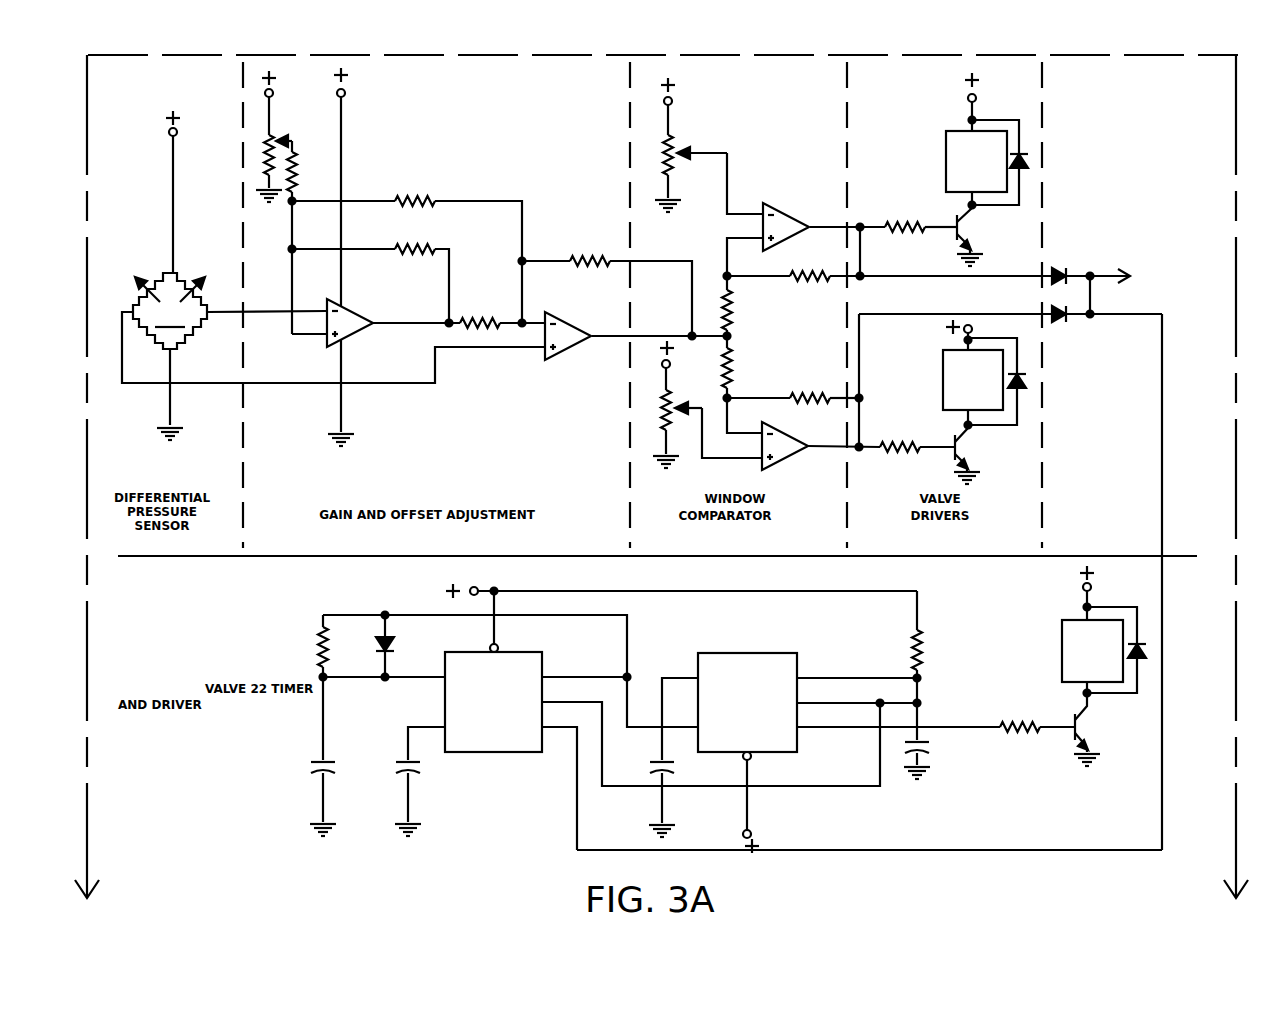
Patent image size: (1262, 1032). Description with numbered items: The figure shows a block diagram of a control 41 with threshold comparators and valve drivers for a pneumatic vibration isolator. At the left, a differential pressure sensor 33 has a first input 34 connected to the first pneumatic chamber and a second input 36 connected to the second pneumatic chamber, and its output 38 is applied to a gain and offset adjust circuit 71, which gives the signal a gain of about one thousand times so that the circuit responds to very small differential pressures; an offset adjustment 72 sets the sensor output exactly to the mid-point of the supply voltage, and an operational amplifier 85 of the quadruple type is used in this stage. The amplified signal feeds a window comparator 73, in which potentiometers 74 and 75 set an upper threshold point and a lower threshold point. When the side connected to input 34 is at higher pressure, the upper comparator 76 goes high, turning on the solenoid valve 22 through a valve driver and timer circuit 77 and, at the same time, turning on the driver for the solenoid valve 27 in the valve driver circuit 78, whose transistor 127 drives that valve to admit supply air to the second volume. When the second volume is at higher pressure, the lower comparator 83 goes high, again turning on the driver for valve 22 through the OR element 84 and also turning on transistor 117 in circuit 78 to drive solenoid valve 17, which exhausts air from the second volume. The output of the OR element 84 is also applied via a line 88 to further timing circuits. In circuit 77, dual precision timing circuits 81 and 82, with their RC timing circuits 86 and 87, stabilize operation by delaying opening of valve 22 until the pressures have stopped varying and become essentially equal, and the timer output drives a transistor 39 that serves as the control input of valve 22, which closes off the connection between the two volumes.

The differential pressure sensor 33 is at (170, 275).
The first input 34 is at (137, 277).
The second input 36 is at (203, 277).
The output 38 is at (326, 369).
The offset adjustment 72 is at (274, 130).
The OR element 84 is at (716, 288).
The operational amplifier 85 is at (623, 327).
The potentiometer 74 is at (709, 146).
The potentiometer 75 is at (707, 404).
The upper comparator 76 is at (841, 220).
The lower comparator 83 is at (858, 467).
The solenoid valve 27 is at (963, 175).
The valve driver transistor 127 is at (990, 235).
The solenoid valve 17 is at (960, 393).
The valve driver transistor 117 is at (993, 454).
The line 88 is at (1138, 270).
The control 41 is at (1122, 146).
The gain and offset adjust circuit 71 is at (412, 552).
The window comparator 73 is at (715, 552).
The valve driver circuit 78 is at (932, 552).
The valve driver and timer circuit 77 is at (170, 753).
The RC timing circuit 86 is at (377, 725).
The timing circuit 81 is at (637, 751).
The timing circuit 82 is at (824, 728).
The RC timing circuit 87 is at (939, 685).
The control input 39 is at (1070, 729).
The solenoid valve 22 is at (1079, 663).